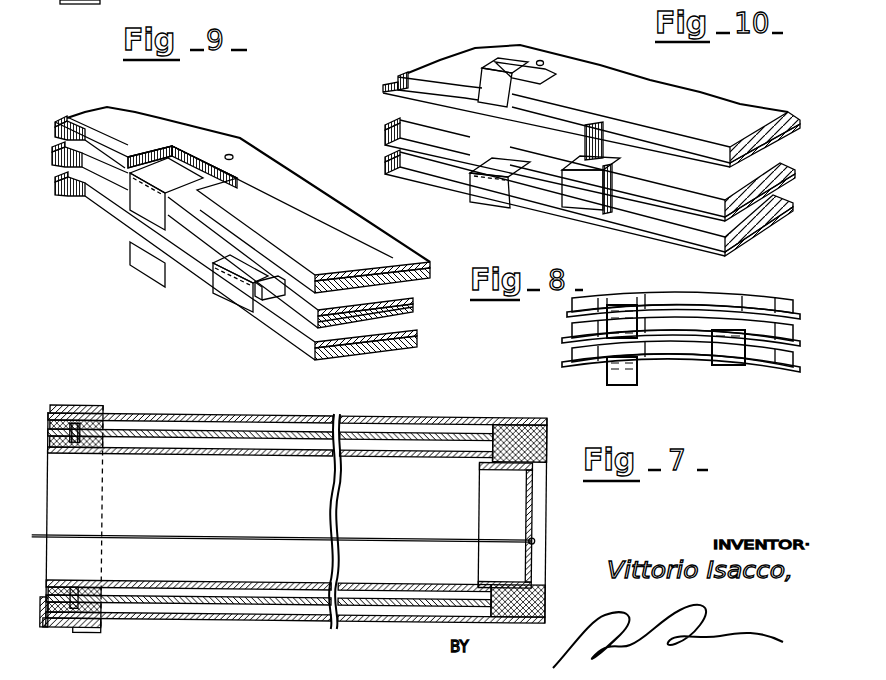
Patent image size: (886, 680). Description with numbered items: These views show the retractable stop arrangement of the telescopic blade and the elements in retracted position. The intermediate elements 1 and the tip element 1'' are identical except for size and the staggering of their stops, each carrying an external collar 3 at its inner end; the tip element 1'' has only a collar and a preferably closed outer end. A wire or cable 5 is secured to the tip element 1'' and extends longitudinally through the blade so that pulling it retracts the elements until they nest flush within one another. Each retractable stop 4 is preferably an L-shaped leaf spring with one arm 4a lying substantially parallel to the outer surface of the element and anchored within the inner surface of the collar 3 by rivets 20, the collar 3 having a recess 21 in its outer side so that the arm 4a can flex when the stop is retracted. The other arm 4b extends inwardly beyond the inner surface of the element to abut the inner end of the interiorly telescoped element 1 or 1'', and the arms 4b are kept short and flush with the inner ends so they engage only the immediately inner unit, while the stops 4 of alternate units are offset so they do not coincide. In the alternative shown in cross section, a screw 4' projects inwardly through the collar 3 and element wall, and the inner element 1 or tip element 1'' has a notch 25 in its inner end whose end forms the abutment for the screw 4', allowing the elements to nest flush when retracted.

In FIG. 9, the intermediate element 1 is at (245, 233).
In FIG. 10, the intermediate element 1 is at (595, 169).
In FIG. 8, the intermediate element 1 is at (681, 336).
In FIG. 7, the intermediate element 1 is at (297, 507).
In FIG. 7, the tip element 1'' is at (469, 503).
In FIG. 9, the external collar 3 is at (58, 170).
In FIG. 10, the external collar 3 is at (670, 243).
In FIG. 8, the external collar 3 is at (700, 298).
In FIG. 7, the external collar 3 is at (103, 625).
In FIG. 10, the retractable stop 4 is at (510, 138).
In FIG. 8, the retractable stop 4 is at (622, 335).
In FIG. 7, the retractable stop 4 is at (88, 408).
In FIG. 7, the screw 4' is at (68, 515).
In FIG. 9, the arm 4a is at (168, 244).
In FIG. 10, the arm 4a is at (522, 66).
In FIG. 7, the arm 4a is at (66, 627).
In FIG. 9, the arm 4b is at (148, 208).
In FIG. 10, the arm 4b is at (488, 92).
In FIG. 8, the arm 4b is at (634, 380).
In FIG. 7, the arm 4b is at (46, 627).
In FIG. 7, the wire 5 is at (417, 535).
In FIG. 9, the rivet 20 is at (236, 156).
In FIG. 10, the rivet 20 is at (546, 62).
In FIG. 9, the recess 21 is at (195, 152).
In FIG. 10, the recess 21 is at (588, 124).
In FIG. 8, the recess 21 is at (620, 300).
In FIG. 7, the recess 21 is at (80, 632).
In FIG. 7, the notch 25 is at (50, 443).